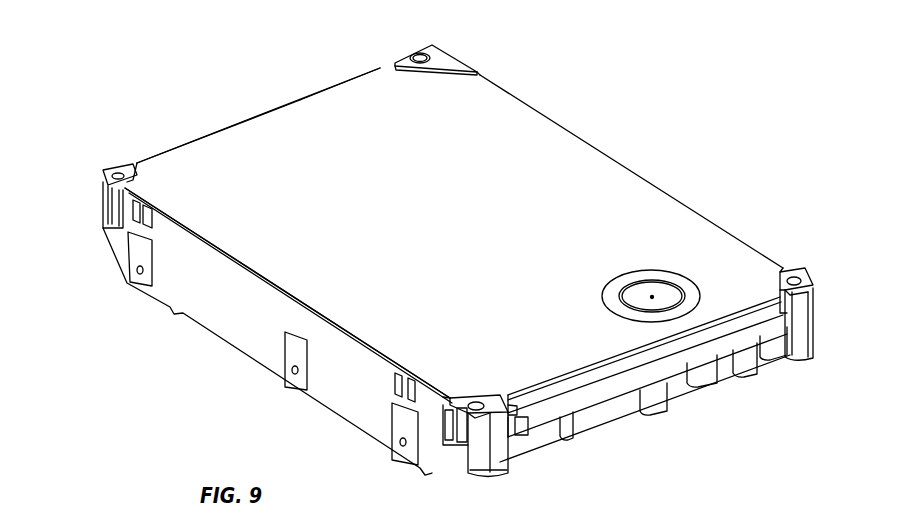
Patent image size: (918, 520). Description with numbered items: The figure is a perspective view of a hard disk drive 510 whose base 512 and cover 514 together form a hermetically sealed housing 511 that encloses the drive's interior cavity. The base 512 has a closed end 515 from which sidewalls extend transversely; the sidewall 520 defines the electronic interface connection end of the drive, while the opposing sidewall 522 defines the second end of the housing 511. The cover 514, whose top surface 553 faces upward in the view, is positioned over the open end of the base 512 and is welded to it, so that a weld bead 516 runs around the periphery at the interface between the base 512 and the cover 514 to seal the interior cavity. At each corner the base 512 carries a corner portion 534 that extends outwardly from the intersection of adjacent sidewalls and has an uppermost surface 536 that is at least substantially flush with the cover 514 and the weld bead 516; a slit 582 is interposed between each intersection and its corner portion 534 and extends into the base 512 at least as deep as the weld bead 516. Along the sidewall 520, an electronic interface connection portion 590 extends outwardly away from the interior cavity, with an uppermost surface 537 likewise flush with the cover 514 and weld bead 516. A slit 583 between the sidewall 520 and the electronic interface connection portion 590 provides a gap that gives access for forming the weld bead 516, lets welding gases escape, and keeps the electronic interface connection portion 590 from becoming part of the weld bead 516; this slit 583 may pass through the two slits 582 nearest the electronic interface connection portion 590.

The hard disk drive 510 is at (695, 84).
The housing 511 is at (707, 215).
The base 512 is at (318, 405).
The cover 514 is at (547, 151).
The closed end 515 is at (277, 382).
The weld bead 516 is at (247, 272).
The sidewall 520 is at (592, 420).
The sidewall 522 is at (277, 102).
The corner portion 534 is at (462, 57).
The uppermost surface 536 is at (443, 52).
The uppermost surface 537 is at (707, 330).
The top surface 553 is at (363, 95).
The slit 582 is at (477, 73).
The slit 583 is at (808, 290).
The electronic interface connection portion 590 is at (622, 385).